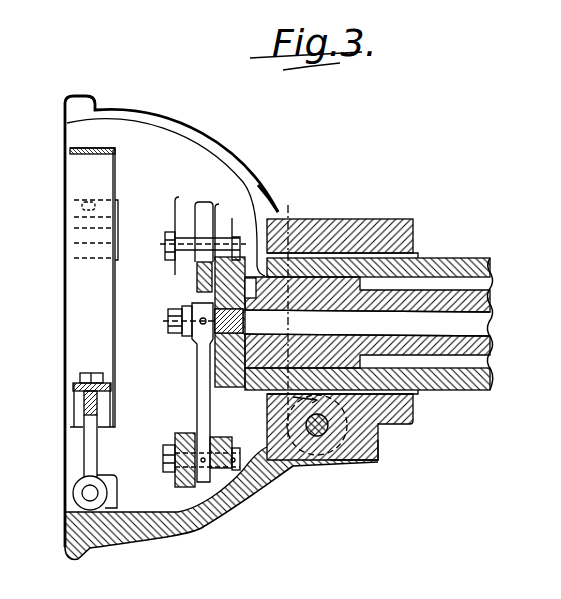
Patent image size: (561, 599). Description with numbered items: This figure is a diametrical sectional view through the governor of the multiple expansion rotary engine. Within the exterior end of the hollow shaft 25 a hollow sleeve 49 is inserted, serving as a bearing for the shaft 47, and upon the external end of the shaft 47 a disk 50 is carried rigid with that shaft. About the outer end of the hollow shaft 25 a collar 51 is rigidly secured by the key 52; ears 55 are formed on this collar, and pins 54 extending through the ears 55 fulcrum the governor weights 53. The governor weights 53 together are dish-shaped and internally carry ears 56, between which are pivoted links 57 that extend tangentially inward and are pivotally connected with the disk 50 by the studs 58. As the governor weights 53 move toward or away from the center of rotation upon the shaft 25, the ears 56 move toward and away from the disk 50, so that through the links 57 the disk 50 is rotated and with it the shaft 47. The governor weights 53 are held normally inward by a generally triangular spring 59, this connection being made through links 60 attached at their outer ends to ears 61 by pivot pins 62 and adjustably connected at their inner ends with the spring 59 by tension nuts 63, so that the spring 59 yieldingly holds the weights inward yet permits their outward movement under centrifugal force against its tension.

The hollow shaft 25 is at (492, 268).
The shaft 47 is at (475, 322).
The hollow sleeve 49 is at (423, 290).
The disk 50 is at (272, 212).
The collar 51 is at (362, 212).
The key 52 is at (378, 256).
The governor weights 53 is at (197, 103).
The pins 54 is at (318, 437).
The ears 55 is at (363, 466).
The ears 56 is at (176, 215).
The links 57 is at (197, 362).
The studs 58 is at (168, 322).
The spring 59 is at (115, 274).
The links 60 is at (83, 441).
The ears 61 is at (114, 479).
The pivot pins 62 is at (80, 495).
The tension nuts 63 is at (102, 377).